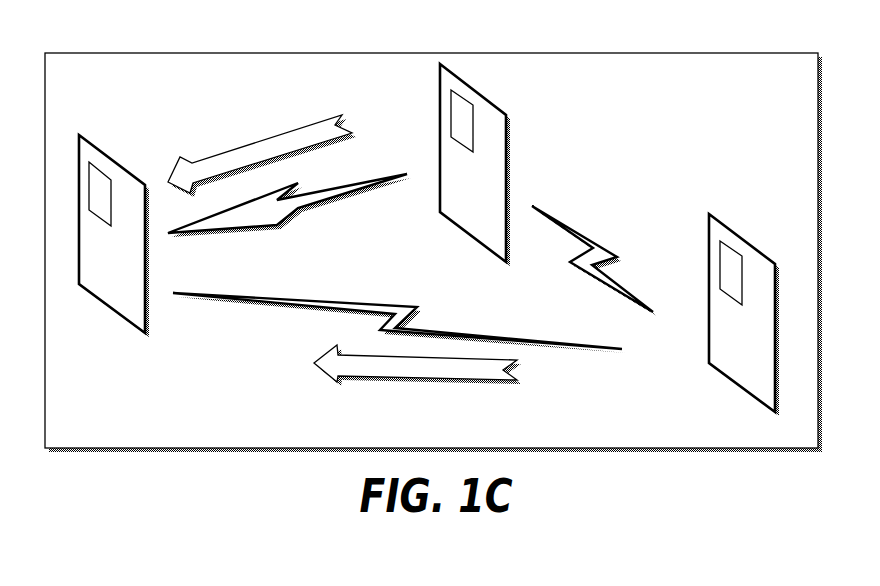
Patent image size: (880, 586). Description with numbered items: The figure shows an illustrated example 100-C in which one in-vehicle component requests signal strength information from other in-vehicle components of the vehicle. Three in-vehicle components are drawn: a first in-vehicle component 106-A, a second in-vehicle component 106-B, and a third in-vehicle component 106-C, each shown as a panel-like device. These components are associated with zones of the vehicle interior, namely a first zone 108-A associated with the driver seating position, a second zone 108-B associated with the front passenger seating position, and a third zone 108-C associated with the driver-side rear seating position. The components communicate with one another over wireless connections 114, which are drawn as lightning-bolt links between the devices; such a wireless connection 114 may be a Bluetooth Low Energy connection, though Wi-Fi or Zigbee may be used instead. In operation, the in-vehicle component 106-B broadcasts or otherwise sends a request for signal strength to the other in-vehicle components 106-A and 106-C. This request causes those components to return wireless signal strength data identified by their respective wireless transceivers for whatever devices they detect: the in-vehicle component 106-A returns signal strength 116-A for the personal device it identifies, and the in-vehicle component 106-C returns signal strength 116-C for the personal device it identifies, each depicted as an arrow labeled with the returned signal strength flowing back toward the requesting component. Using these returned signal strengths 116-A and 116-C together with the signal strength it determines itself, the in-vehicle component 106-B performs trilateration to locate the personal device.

The wireless communication environment 100-C is at (130, 38).
The in-vehicle component 106-A is at (440, 97).
The in-vehicle component 106-B is at (100, 149).
The in-vehicle component 106-C is at (709, 248).
The first zone 108-A is at (451, 119).
The second zone 108-B is at (107, 176).
The third zone 108-C is at (720, 269).
The wireless connection 114 is at (323, 212).
The signal strength 116-A is at (262, 136).
The signal strength 116-C is at (422, 383).